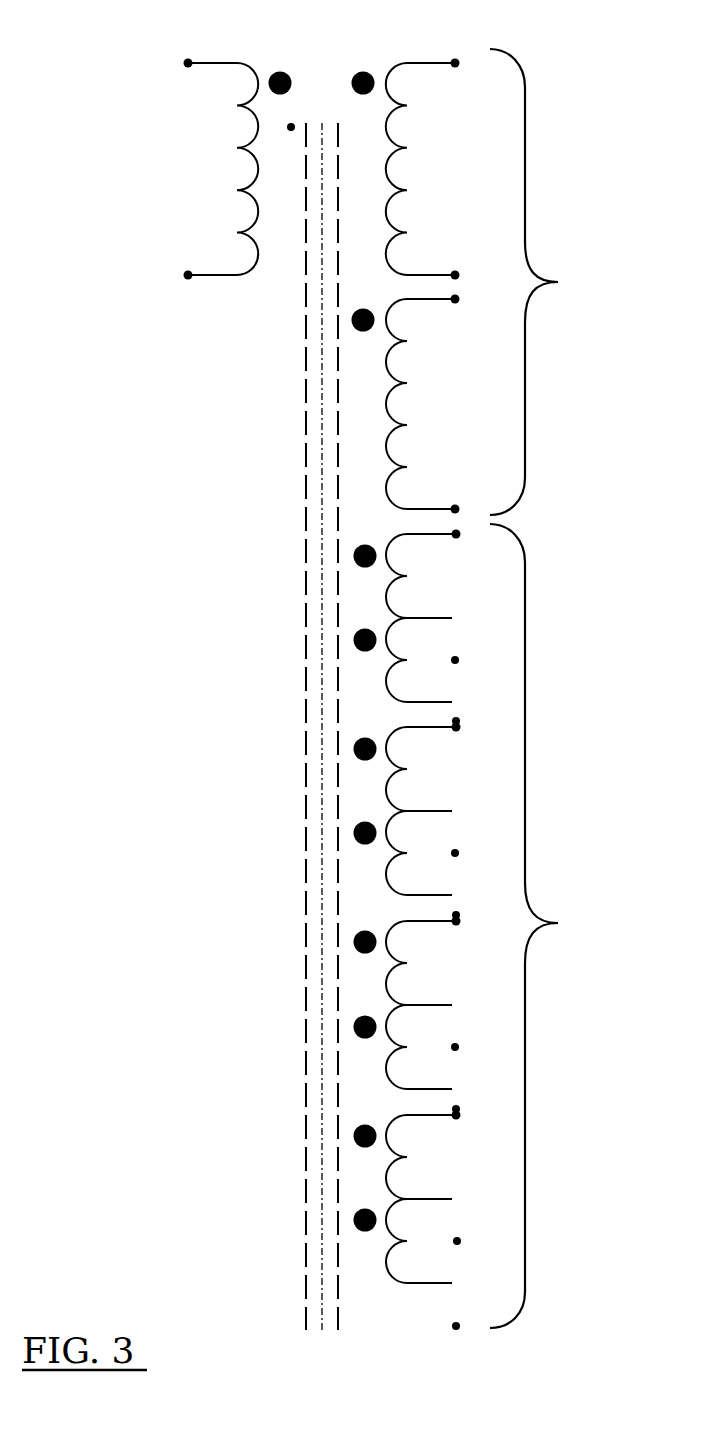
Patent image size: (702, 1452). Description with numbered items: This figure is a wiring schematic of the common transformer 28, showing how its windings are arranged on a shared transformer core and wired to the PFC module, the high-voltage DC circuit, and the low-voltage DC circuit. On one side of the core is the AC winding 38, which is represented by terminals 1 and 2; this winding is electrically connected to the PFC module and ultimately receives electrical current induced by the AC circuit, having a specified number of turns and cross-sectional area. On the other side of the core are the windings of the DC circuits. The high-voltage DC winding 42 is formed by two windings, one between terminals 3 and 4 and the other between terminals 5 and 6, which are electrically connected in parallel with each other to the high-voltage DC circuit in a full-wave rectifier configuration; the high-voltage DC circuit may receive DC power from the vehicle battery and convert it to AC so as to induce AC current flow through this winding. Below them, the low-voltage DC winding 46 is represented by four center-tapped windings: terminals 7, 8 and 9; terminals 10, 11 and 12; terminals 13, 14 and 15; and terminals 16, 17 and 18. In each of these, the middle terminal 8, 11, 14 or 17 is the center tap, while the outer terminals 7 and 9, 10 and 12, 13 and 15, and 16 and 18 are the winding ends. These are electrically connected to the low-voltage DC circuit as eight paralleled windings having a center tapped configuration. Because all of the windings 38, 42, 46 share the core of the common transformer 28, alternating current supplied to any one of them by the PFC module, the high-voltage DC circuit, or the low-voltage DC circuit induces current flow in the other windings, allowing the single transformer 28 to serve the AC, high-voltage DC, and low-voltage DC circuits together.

The terminal 1 is at (200, 63).
The terminal 2 is at (200, 275).
The terminal 3 is at (443, 63).
The terminal 4 is at (443, 275).
The terminal 5 is at (443, 299).
The terminal 6 is at (443, 509).
The terminal 7 is at (443, 534).
The terminal 8 is at (443, 618).
The terminal 9 is at (443, 702).
The terminal 10 is at (449, 727).
The terminal 11 is at (449, 811).
The terminal 12 is at (449, 895).
The terminal 13 is at (449, 921).
The terminal 14 is at (449, 1005).
The terminal 15 is at (449, 1089).
The terminal 16 is at (449, 1115).
The terminal 17 is at (449, 1199).
The terminal 18 is at (449, 1283).
The common transformer 28 is at (366, 25).
The AC winding 38 is at (150, 174).
The high-voltage DC winding 42 is at (498, 285).
The low-voltage DC winding 46 is at (498, 925).